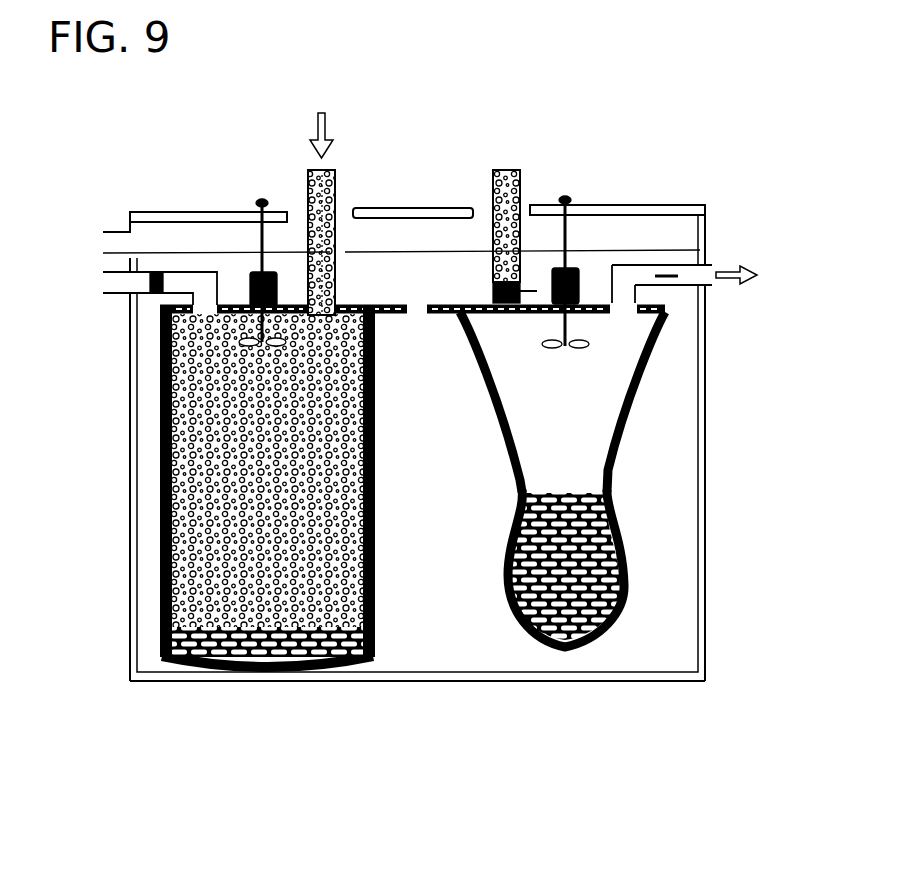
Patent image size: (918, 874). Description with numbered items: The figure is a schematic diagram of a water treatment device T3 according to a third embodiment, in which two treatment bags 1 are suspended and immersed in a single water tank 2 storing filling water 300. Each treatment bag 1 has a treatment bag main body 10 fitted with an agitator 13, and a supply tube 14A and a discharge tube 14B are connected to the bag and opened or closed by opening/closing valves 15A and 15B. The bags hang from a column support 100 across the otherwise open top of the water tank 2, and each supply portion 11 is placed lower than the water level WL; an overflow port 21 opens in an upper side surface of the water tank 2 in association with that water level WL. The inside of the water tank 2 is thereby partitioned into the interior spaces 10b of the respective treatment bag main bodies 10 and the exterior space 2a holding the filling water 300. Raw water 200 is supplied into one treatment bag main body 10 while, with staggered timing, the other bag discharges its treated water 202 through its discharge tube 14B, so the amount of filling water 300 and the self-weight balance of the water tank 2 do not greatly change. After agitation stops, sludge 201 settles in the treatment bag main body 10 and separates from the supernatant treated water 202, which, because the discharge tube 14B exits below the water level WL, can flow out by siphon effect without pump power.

The treatment bag 1 is at (415, 390).
The water tank 2 is at (408, 479).
The exterior space 2a is at (447, 679).
The treatment bag main body 10 is at (520, 453).
The interior space 10b is at (527, 562).
The supply portion 11 is at (440, 310).
The agitator 13 is at (244, 258).
The supply tube 14A is at (336, 176).
The discharge tube 14B is at (113, 293).
The opening/closing valve 15A is at (312, 308).
The opening/closing valve 15B is at (157, 272).
The overflow port 21 is at (129, 229).
The column support 100 is at (432, 207).
The raw water 200 is at (160, 381).
The sludge 201 is at (530, 600).
The treated water 202 is at (600, 412).
The filling water 300 is at (677, 618).
The water level WL is at (677, 250).
The water treatment device T3 is at (420, 86).